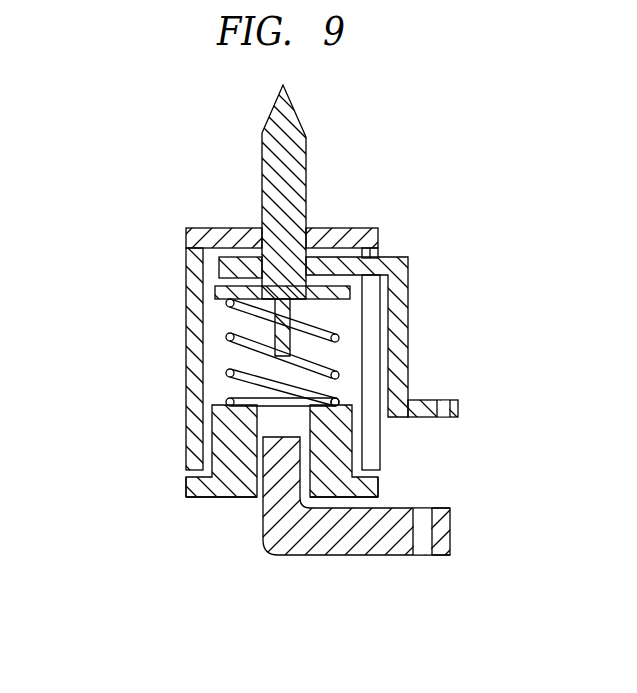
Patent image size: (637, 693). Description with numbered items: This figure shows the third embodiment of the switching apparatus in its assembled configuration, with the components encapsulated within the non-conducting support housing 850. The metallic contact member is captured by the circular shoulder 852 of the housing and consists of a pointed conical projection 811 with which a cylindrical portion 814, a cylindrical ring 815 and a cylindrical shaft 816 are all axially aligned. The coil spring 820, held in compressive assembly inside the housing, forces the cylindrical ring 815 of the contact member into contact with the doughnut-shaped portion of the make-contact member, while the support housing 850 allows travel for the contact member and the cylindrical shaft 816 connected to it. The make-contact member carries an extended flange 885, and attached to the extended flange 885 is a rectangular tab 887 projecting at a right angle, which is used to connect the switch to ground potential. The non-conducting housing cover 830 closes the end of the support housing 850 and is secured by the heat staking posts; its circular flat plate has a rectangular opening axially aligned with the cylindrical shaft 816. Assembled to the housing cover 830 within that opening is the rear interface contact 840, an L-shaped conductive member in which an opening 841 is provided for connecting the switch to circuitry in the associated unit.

The conical projection 811 is at (294, 109).
The cylindrical portion 814 is at (306, 168).
The cylindrical ring 815 is at (162, 342).
The cylindrical shaft 816 is at (274, 326).
The coil spring 820 is at (226, 337).
The housing cover 830 is at (186, 486).
The rear interface contact 840 is at (347, 555).
The opening 841 is at (422, 555).
The support housing 850 is at (186, 258).
The circular shoulder 852 is at (366, 229).
The extended flange 885 is at (408, 297).
The rectangular tab 887 is at (427, 400).